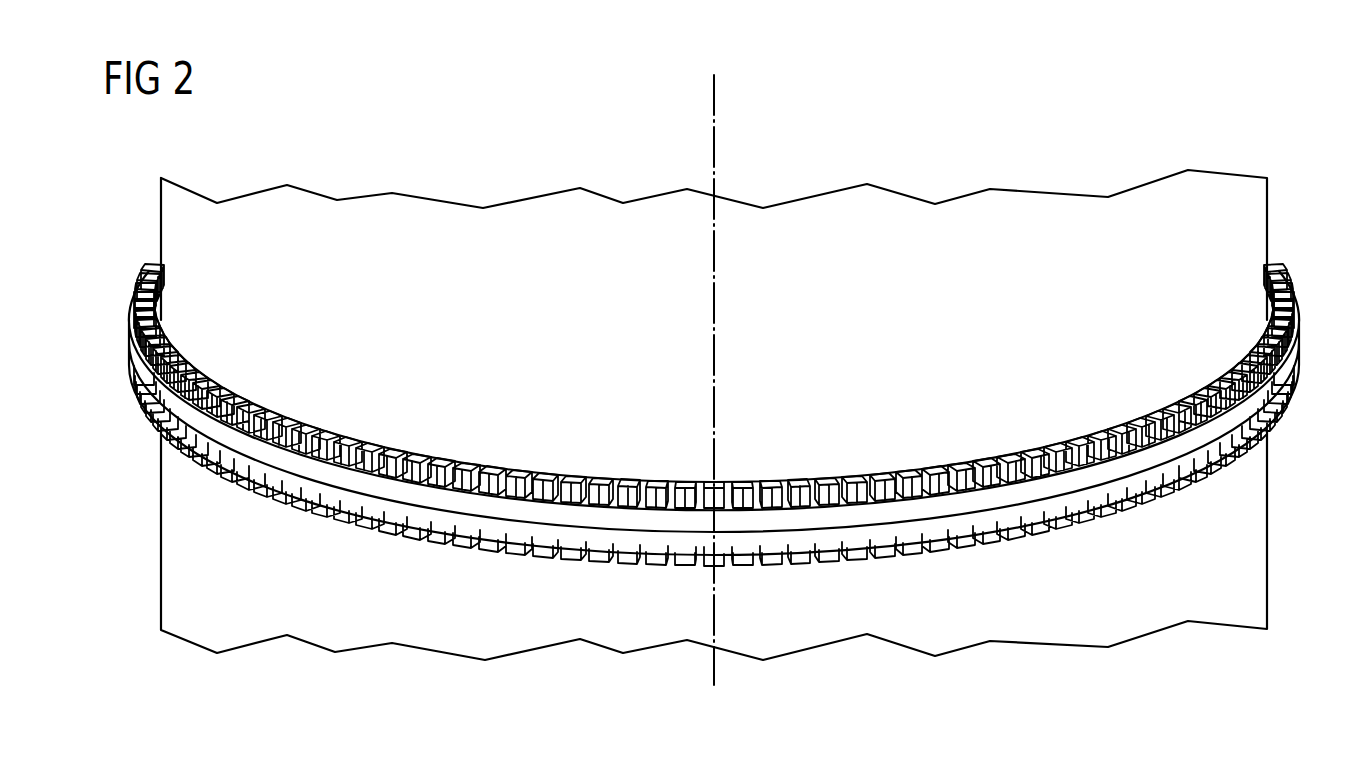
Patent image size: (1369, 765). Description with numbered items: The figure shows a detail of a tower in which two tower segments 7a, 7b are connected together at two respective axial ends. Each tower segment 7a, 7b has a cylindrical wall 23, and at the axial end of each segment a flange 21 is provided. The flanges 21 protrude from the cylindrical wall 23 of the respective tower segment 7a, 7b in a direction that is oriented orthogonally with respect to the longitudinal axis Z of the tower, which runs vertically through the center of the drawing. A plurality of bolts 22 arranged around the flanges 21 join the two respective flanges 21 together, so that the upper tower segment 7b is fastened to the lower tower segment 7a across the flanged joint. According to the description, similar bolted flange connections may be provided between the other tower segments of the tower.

The tower segment 7a is at (1252, 518).
The tower segment 7b is at (1252, 212).
The flange 21 is at (1293, 355).
The bolt 22 is at (1302, 289).
The cylindrical wall 23 is at (176, 235).
The longitudinal axis Z is at (714, 95).